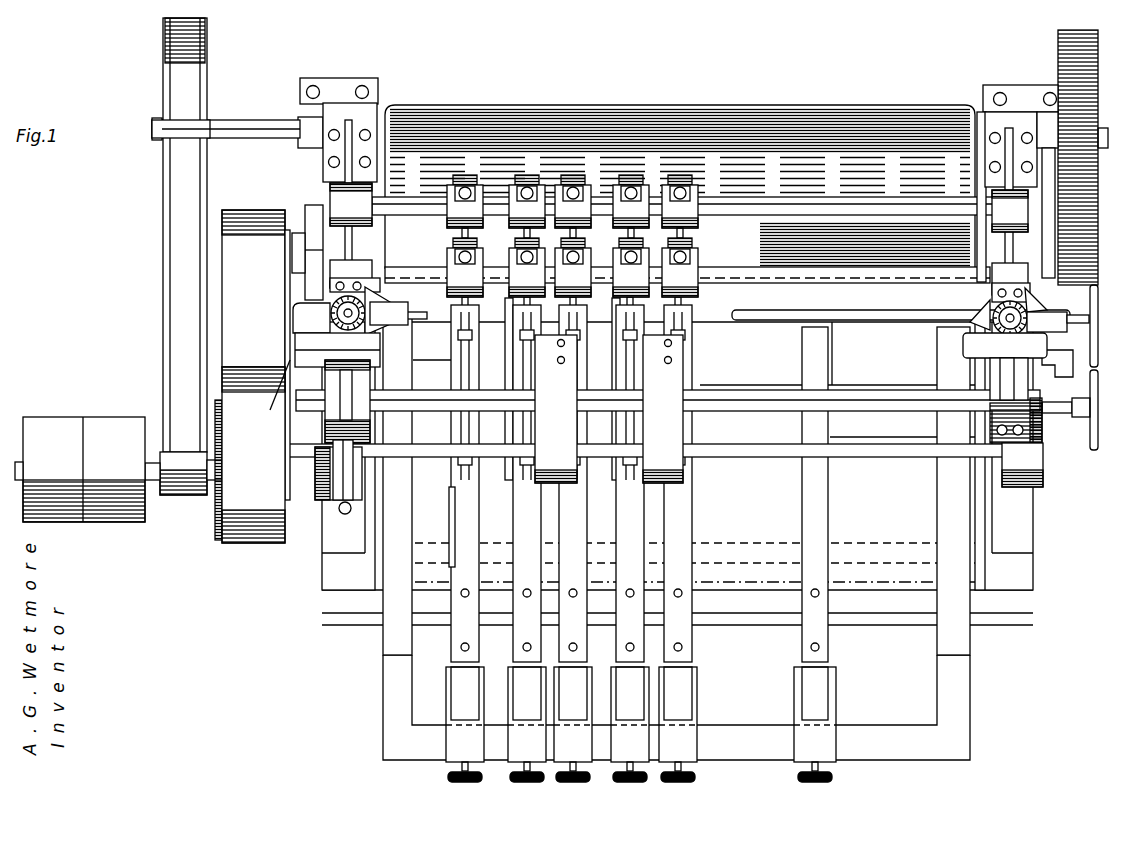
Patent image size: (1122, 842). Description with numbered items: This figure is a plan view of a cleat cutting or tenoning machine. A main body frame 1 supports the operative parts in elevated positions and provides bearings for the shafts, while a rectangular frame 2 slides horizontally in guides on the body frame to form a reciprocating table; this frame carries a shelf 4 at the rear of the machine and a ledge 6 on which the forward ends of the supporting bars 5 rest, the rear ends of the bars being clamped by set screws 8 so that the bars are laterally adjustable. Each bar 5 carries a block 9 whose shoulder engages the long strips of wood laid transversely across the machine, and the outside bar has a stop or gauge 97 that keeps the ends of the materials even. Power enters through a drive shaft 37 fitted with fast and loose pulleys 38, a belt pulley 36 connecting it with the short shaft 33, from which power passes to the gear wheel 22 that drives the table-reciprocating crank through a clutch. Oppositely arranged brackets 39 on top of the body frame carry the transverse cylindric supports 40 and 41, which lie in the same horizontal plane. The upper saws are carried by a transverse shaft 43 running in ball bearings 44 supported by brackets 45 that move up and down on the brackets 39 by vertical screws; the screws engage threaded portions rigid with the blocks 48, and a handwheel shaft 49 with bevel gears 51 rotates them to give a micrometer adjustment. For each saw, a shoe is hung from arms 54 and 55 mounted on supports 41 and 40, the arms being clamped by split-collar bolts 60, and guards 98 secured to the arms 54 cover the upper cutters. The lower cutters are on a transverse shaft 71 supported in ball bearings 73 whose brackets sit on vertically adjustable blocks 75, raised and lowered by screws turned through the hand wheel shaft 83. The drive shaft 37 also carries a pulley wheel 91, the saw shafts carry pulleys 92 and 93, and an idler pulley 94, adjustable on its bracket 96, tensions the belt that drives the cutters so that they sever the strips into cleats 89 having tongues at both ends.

The main body frame 1 is at (330, 576).
The rectangular frame 2 is at (962, 694).
The shelf 4 is at (932, 112).
The supporting bars 5 is at (470, 533).
The ledge 6 is at (896, 332).
The set screws 8 is at (790, 777).
The block 9 is at (518, 639).
The gear wheel 22 is at (1060, 56).
The short shaft 33 is at (248, 128).
The belt pulley 36 is at (170, 265).
The drive shaft 37 is at (153, 482).
The fast and loose pulleys 38 is at (93, 428).
The brackets 39 is at (350, 126).
The rock shaft or cylindric support 40 is at (844, 276).
The rock shaft or cylindric support 41 is at (808, 216).
The transverse shaft 43 is at (877, 398).
The ball bearings 44 is at (332, 380).
The brackets 45 is at (318, 342).
The blocks 48 is at (318, 328).
The handwheel shaft 49 is at (417, 312).
The bevel gears 51 is at (368, 330).
The arms 54 is at (535, 378).
The arms 55 is at (480, 238).
The clamping bolts or screws 60 is at (631, 198).
The transverse shaft 71 is at (890, 448).
The ball bearings 73 is at (326, 462).
The blocks 75 is at (302, 360).
The hand wheel shaft 83 is at (1055, 405).
The cleats 89 is at (764, 560).
The pulley wheel 91 is at (232, 525).
The pulley 92 is at (222, 384).
The pulley 93 is at (225, 462).
The idler pulley 94 is at (297, 262).
The bracket 96 is at (312, 282).
The stop or gauge 97 is at (450, 528).
The guards 98 is at (560, 478).